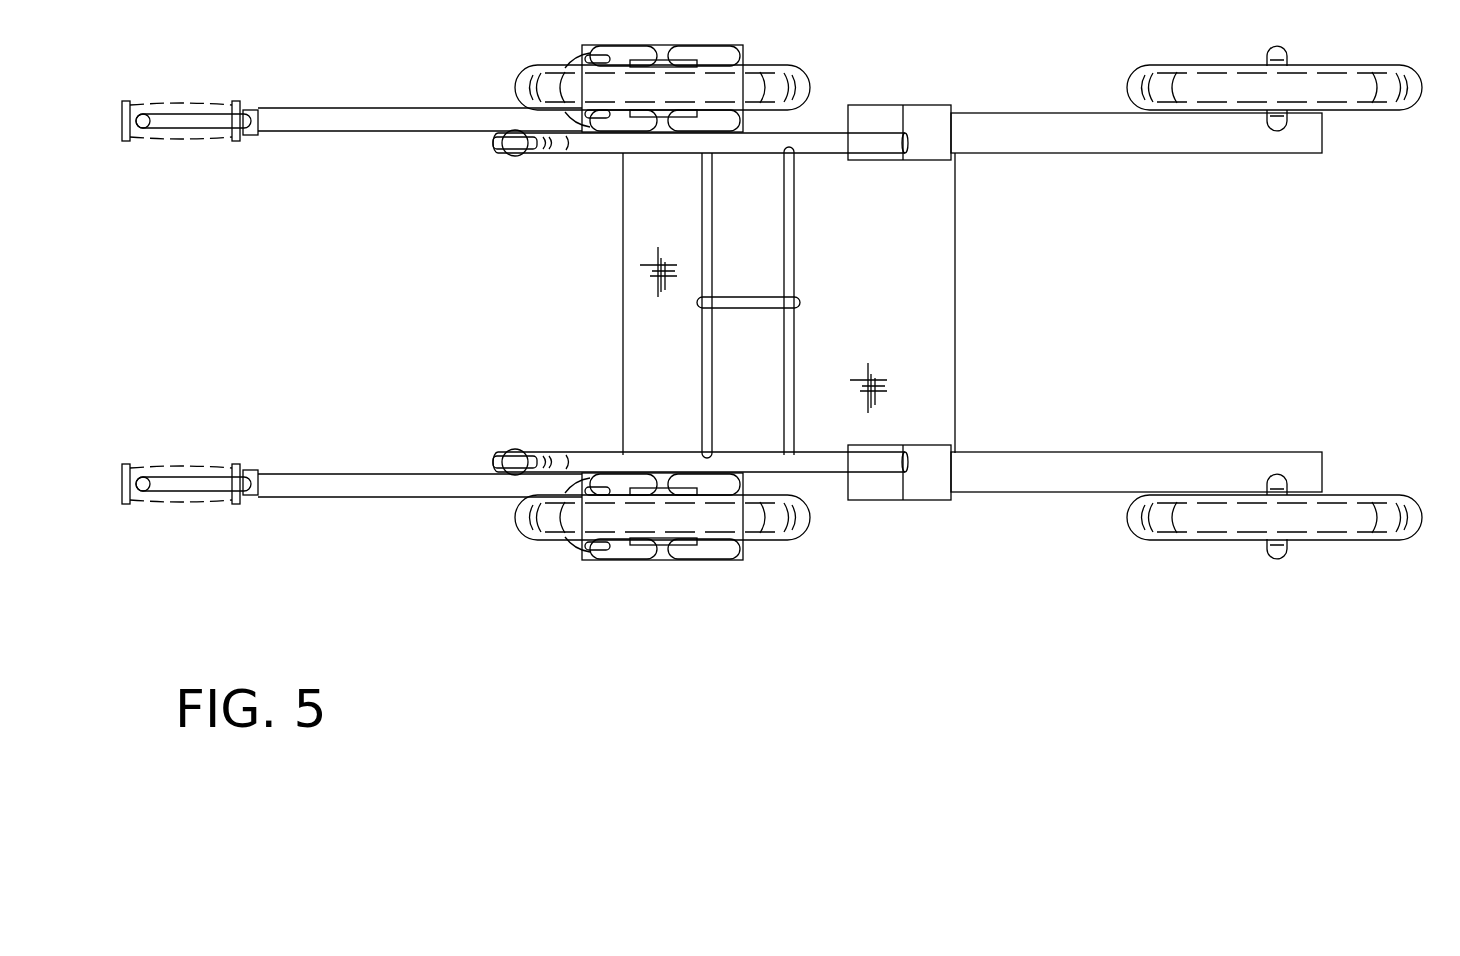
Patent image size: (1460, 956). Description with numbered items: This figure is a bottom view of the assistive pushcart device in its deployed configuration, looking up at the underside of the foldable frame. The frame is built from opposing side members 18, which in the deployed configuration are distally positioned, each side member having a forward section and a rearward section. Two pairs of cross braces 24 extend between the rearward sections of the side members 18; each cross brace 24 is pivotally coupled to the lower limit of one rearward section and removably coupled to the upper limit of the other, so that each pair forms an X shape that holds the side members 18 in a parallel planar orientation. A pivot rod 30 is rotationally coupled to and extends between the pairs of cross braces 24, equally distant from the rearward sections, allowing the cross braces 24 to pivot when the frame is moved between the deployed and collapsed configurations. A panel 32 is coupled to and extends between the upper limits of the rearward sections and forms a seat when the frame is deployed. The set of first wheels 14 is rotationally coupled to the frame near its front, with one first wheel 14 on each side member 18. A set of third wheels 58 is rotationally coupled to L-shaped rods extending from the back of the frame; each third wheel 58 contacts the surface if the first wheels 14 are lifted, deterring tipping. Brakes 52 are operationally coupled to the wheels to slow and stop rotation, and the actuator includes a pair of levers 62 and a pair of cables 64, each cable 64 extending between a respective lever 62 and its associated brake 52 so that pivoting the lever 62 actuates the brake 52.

The first wheels 14 is at (1360, 498).
The opposing side members 18 is at (1020, 153).
The cross braces 24 is at (705, 225).
The pivot rod 30 is at (748, 302).
The panel 32 is at (910, 363).
The brakes 52 is at (600, 120).
The third wheels 58 is at (514, 144).
The levers 62 is at (177, 122).
The cables 64 is at (418, 108).